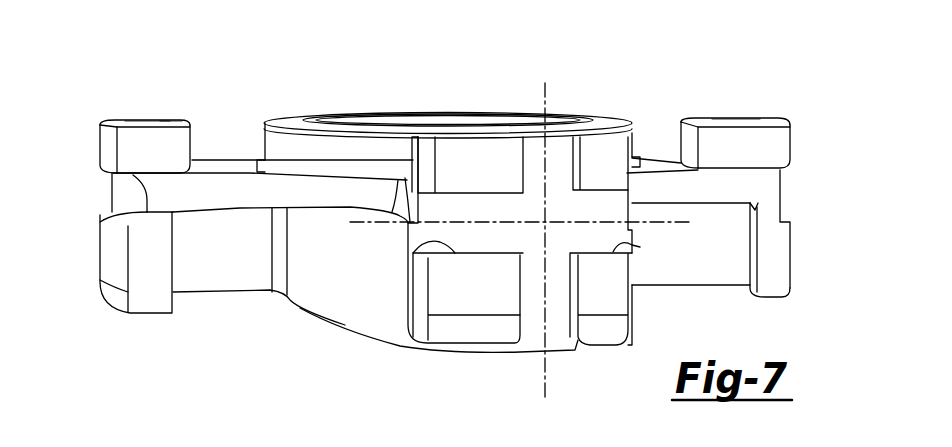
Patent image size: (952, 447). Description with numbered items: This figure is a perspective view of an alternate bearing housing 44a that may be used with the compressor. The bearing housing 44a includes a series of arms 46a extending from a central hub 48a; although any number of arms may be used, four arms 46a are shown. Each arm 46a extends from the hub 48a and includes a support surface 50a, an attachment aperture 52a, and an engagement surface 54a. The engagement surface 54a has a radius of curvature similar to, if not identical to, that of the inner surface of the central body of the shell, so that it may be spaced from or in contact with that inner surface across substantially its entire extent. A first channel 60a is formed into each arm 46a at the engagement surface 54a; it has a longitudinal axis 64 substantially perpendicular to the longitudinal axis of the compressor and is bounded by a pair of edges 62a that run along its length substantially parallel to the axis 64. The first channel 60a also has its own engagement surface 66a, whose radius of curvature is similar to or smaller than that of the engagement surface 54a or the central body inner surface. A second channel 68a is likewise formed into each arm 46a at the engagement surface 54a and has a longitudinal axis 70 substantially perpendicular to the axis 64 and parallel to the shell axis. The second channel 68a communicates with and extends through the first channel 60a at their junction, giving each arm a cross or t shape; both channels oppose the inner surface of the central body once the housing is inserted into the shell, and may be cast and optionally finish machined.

The bearing housing 44a is at (90, 154).
The arms 46a is at (117, 120).
The central hub 48a is at (385, 348).
The support surface 50a is at (147, 120).
The attachment aperture 52a is at (170, 120).
The engagement surface 54a is at (476, 162).
The first channel 60a is at (105, 220).
The edges 62a is at (485, 185).
The longitudinal axis 64 is at (372, 223).
The engagement surface 66a is at (540, 205).
The second channel 68a is at (555, 175).
The longitudinal axis 70 is at (547, 367).